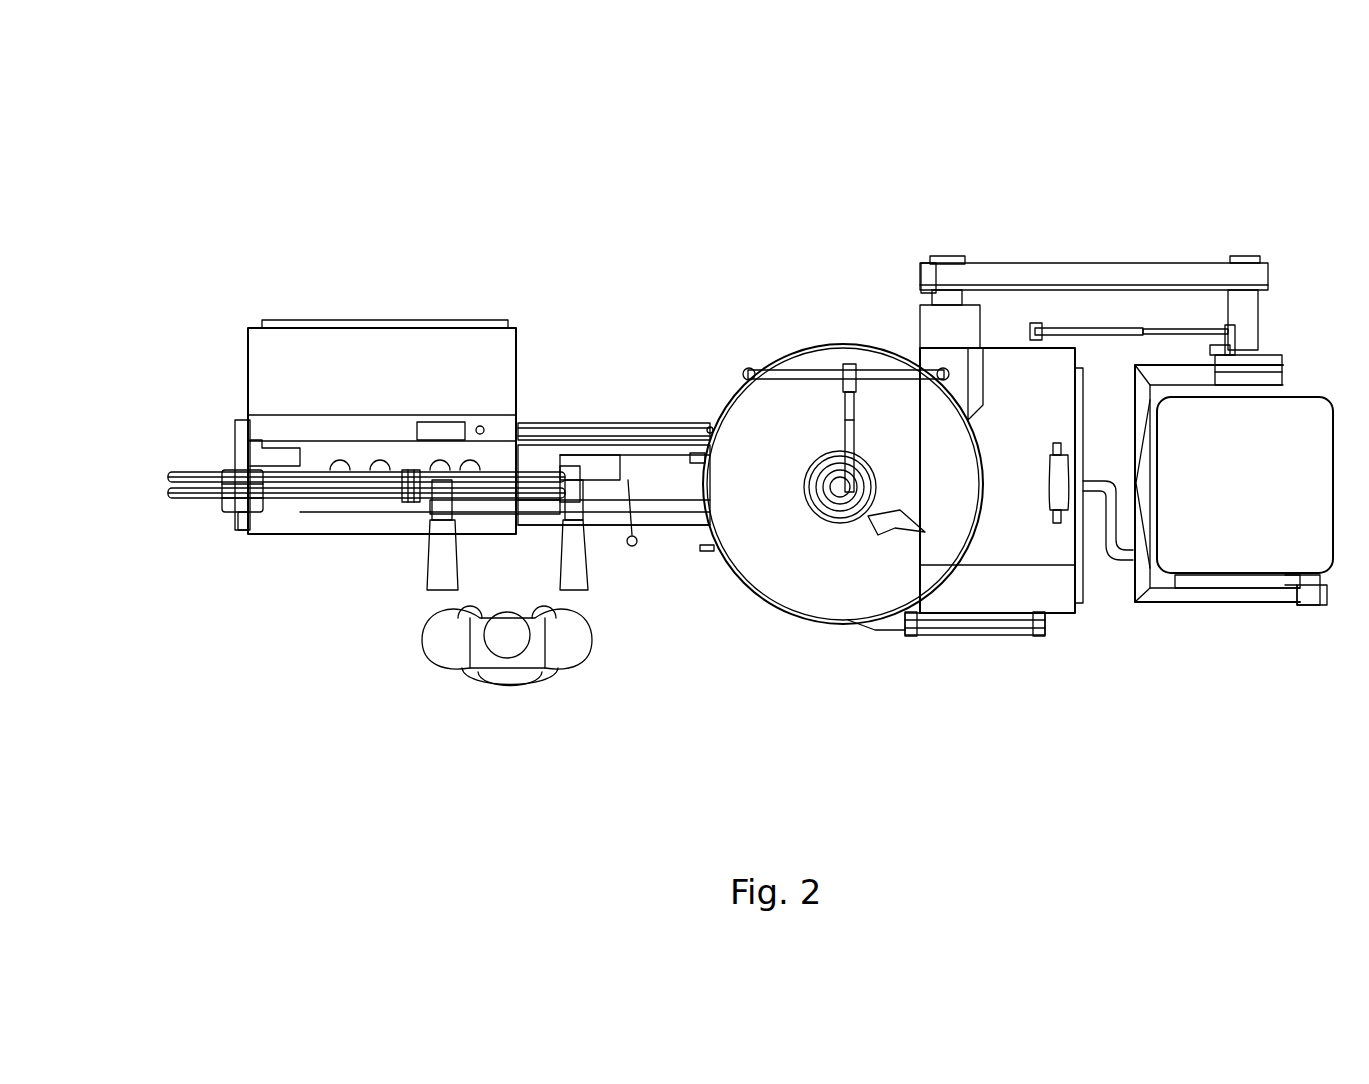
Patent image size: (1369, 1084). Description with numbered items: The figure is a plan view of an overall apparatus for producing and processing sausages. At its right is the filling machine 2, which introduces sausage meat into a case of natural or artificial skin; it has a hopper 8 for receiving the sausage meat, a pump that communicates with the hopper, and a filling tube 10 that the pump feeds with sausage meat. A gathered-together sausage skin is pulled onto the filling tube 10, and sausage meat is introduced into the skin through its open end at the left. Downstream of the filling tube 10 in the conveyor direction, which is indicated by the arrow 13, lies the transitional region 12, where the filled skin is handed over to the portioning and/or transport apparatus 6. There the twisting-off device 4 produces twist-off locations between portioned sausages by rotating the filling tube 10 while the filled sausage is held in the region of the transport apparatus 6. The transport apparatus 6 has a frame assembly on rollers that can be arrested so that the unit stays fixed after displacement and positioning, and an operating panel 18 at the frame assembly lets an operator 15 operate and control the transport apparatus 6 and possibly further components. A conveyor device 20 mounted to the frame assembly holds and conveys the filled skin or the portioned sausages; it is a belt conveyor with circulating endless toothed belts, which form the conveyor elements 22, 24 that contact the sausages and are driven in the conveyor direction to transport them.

The filling machine 2 is at (1020, 686).
The twisting-off device 4 is at (618, 418).
The portioning and/or transport apparatus 6 is at (385, 226).
The hopper 8 is at (790, 620).
The filling tube 10 is at (683, 490).
The transitional region 12 is at (558, 410).
The arrow 13 is at (640, 482).
The operator 15 is at (482, 700).
The operating panel 18 is at (458, 430).
The conveyor device 20 is at (490, 504).
The conveyor element 22 is at (410, 478).
The conveyor element 24 is at (178, 500).